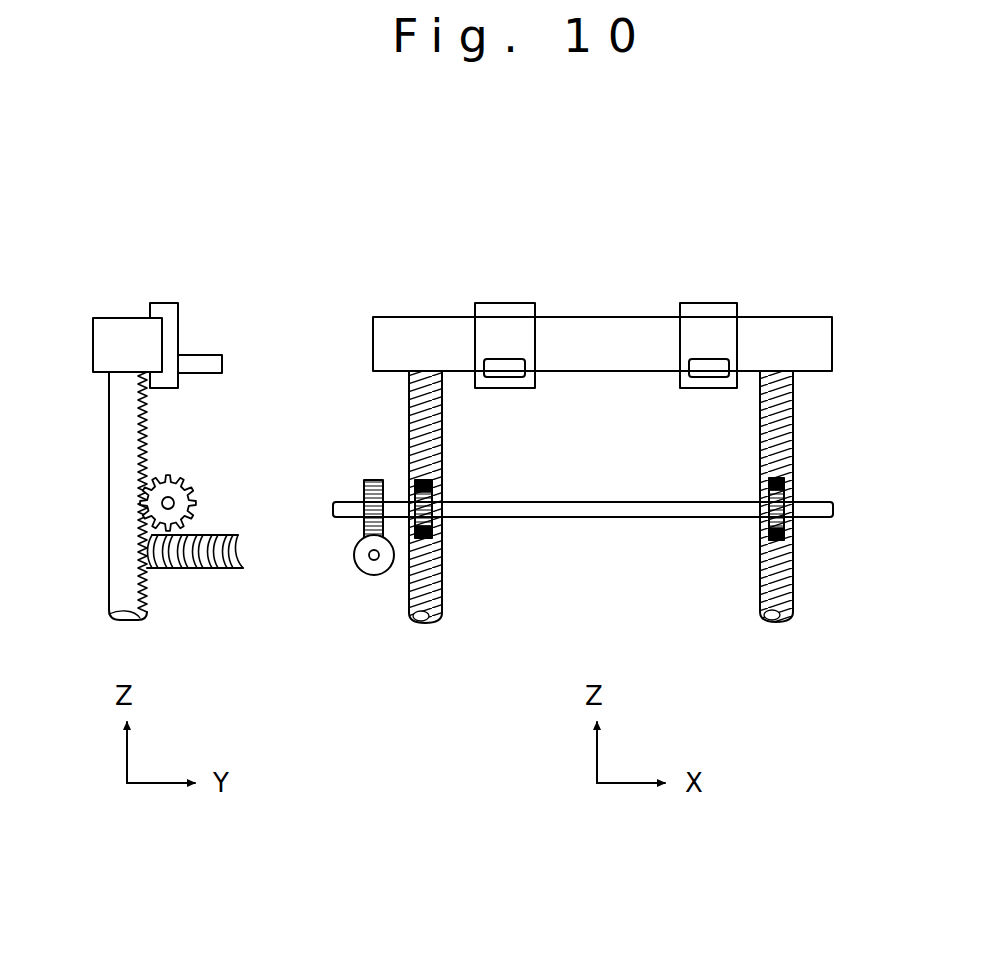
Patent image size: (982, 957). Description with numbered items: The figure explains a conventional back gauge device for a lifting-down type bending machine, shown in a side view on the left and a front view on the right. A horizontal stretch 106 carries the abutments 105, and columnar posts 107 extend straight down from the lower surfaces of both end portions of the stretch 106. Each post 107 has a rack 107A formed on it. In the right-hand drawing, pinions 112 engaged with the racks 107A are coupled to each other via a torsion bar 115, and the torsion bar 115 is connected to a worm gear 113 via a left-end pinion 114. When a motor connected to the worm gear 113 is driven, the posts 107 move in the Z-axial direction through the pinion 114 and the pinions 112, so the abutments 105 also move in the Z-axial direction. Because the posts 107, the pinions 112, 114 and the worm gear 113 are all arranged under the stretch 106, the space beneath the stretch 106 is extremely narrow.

The abutment 105 is at (212, 353).
The stretch 106 is at (125, 342).
The columnar post 107 is at (125, 417).
The rack 107A is at (148, 423).
The pinion 112 is at (430, 478).
The worm gear 113 is at (190, 570).
The left-end pinion 114 is at (178, 477).
The torsion bar 115 is at (622, 508).